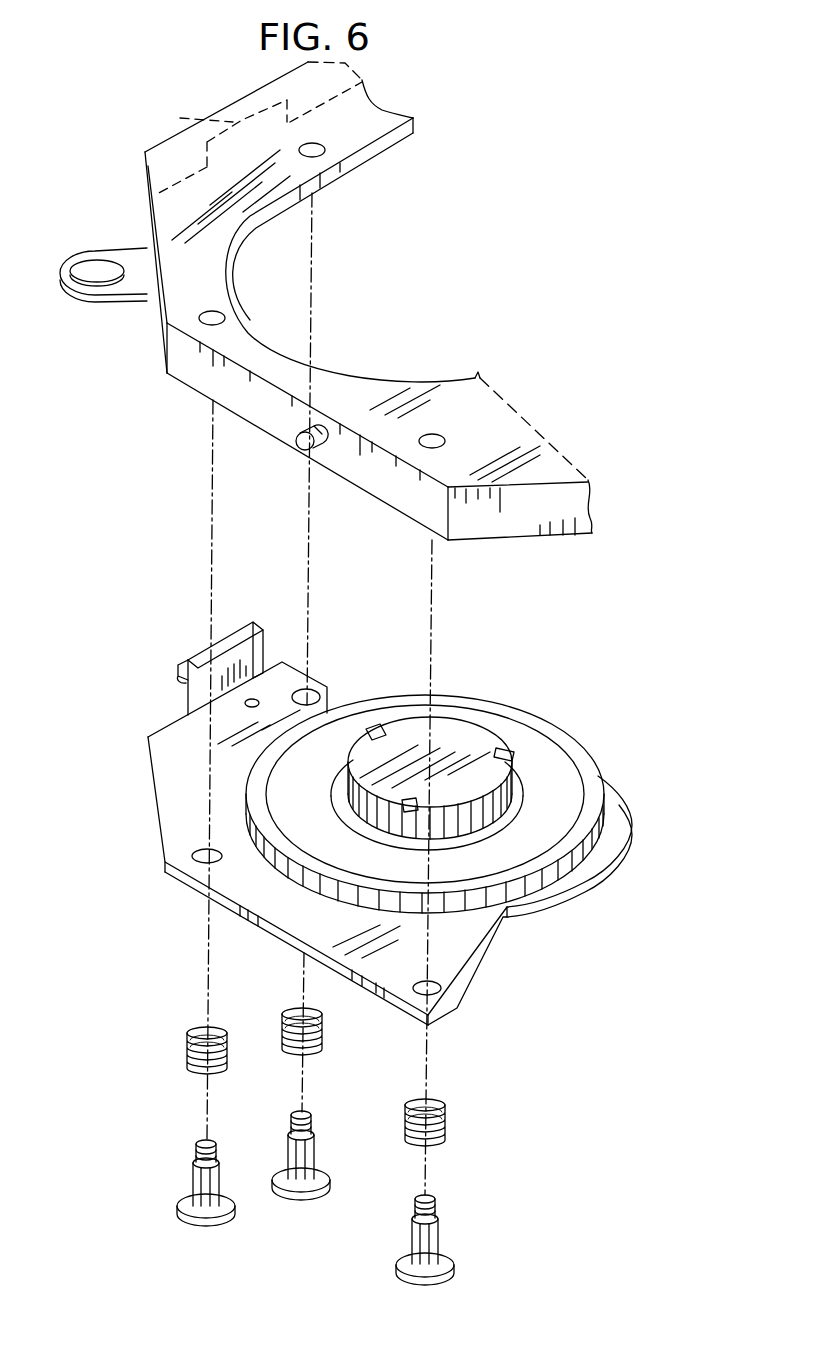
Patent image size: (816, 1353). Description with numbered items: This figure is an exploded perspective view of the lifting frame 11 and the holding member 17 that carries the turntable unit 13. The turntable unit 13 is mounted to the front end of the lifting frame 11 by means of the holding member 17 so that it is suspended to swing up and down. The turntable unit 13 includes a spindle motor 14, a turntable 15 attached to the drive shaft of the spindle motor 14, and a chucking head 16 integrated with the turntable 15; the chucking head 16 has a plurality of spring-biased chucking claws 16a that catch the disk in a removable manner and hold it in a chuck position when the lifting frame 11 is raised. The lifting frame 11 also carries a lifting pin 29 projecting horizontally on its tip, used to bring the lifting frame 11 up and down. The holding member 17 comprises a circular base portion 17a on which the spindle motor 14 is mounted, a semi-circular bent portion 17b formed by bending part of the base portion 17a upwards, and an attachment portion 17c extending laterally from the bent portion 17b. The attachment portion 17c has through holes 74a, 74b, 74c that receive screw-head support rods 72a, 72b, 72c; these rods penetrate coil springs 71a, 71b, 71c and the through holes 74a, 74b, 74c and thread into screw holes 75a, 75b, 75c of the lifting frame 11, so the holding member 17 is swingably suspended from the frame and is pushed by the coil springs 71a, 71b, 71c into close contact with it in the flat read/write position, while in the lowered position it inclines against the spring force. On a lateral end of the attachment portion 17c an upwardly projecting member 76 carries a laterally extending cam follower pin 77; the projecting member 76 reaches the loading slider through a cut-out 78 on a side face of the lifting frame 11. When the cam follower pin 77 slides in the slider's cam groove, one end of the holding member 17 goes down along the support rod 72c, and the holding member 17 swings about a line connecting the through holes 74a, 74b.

The lifting frame 11 is at (147, 223).
The turntable unit 13 is at (538, 712).
The spindle motor 14 is at (273, 796).
The turntable 15 is at (551, 752).
The chucking head 16 is at (456, 726).
The chucking claws 16a is at (523, 743).
The holding member 17 is at (165, 884).
The circular base portion 17a is at (617, 812).
The semi-circular bent portion 17b is at (503, 930).
The attachment portion 17c is at (157, 742).
The lifting pin 29 is at (318, 448).
The coil spring 71a is at (446, 1120).
The coil spring 71b is at (188, 1051).
The coil spring 71c is at (323, 1032).
The support rod 72a is at (418, 1235).
The support rod 72b is at (195, 1183).
The support rod 72c is at (312, 1160).
The through hole 74a is at (432, 984).
The through hole 74b is at (205, 853).
The through hole 74c is at (308, 695).
The screw hole 75a is at (434, 440).
The screw hole 75b is at (212, 316).
The screw hole 75c is at (314, 150).
The projecting member 76 is at (228, 638).
The cam follower pin 77 is at (180, 669).
The cut-out 78 is at (180, 118).